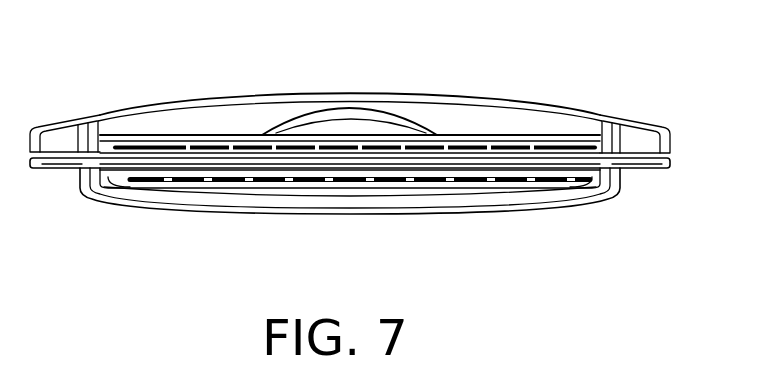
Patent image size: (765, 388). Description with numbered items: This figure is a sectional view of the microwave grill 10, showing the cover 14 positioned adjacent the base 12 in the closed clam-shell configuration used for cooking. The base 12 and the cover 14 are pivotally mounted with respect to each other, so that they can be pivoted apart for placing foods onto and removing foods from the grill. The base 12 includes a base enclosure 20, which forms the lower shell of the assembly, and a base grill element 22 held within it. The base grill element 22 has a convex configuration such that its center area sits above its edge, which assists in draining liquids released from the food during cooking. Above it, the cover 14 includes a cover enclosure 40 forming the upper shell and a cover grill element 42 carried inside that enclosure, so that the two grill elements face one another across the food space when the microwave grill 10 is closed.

The microwave grill 10 is at (550, 294).
The base 12 is at (167, 214).
The cover 14 is at (175, 117).
The base enclosure 20 is at (262, 213).
The base grill element 22 is at (455, 182).
The cover enclosure 40 is at (435, 105).
The cover grill element 42 is at (527, 145).